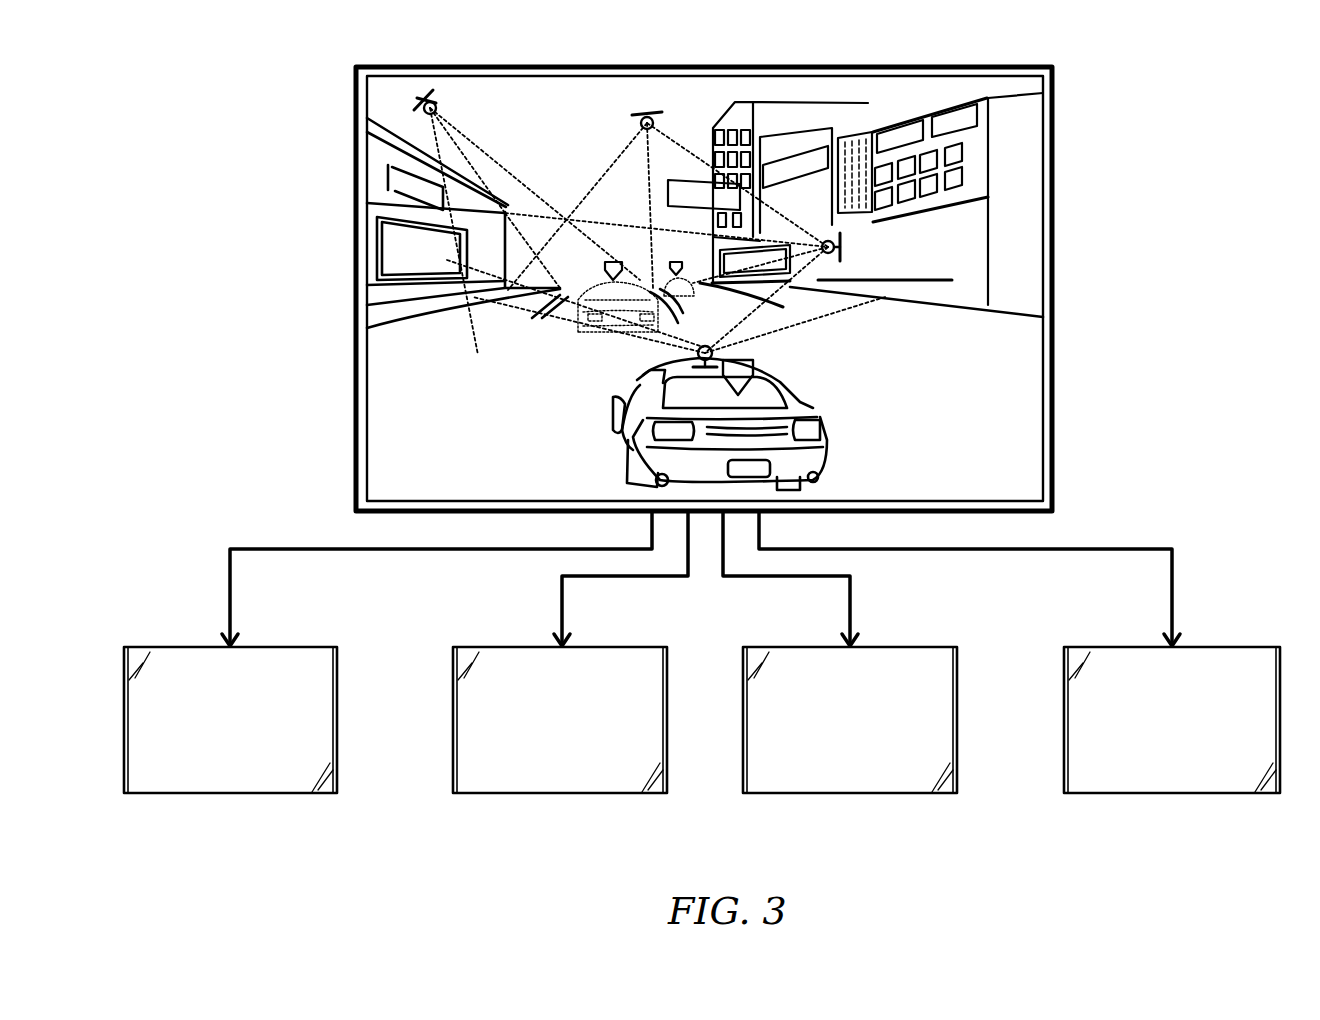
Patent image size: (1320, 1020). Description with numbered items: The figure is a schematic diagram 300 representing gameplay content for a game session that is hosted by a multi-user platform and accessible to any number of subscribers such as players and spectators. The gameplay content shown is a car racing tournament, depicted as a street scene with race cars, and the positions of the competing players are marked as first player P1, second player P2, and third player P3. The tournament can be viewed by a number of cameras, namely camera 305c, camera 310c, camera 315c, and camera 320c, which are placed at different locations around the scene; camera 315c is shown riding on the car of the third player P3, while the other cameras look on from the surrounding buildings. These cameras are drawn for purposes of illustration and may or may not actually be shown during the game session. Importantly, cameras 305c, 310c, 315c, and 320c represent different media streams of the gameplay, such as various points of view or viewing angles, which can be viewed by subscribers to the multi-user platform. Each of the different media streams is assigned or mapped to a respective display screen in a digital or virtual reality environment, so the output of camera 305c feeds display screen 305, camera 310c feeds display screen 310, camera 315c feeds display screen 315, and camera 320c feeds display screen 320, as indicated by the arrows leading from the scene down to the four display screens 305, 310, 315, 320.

The schematic diagram 300 is at (1046, 44).
The display screen 305 is at (257, 774).
The display screen 310 is at (562, 774).
The display screen 315 is at (852, 774).
The display screen 320 is at (1172, 774).
The camera 305c is at (440, 104).
The camera 310c is at (647, 117).
The camera 315c is at (705, 346).
The camera 320c is at (836, 246).
The player 1 P1 is at (676, 259).
The player 2 P2 is at (612, 260).
The player 3 P3 is at (738, 367).